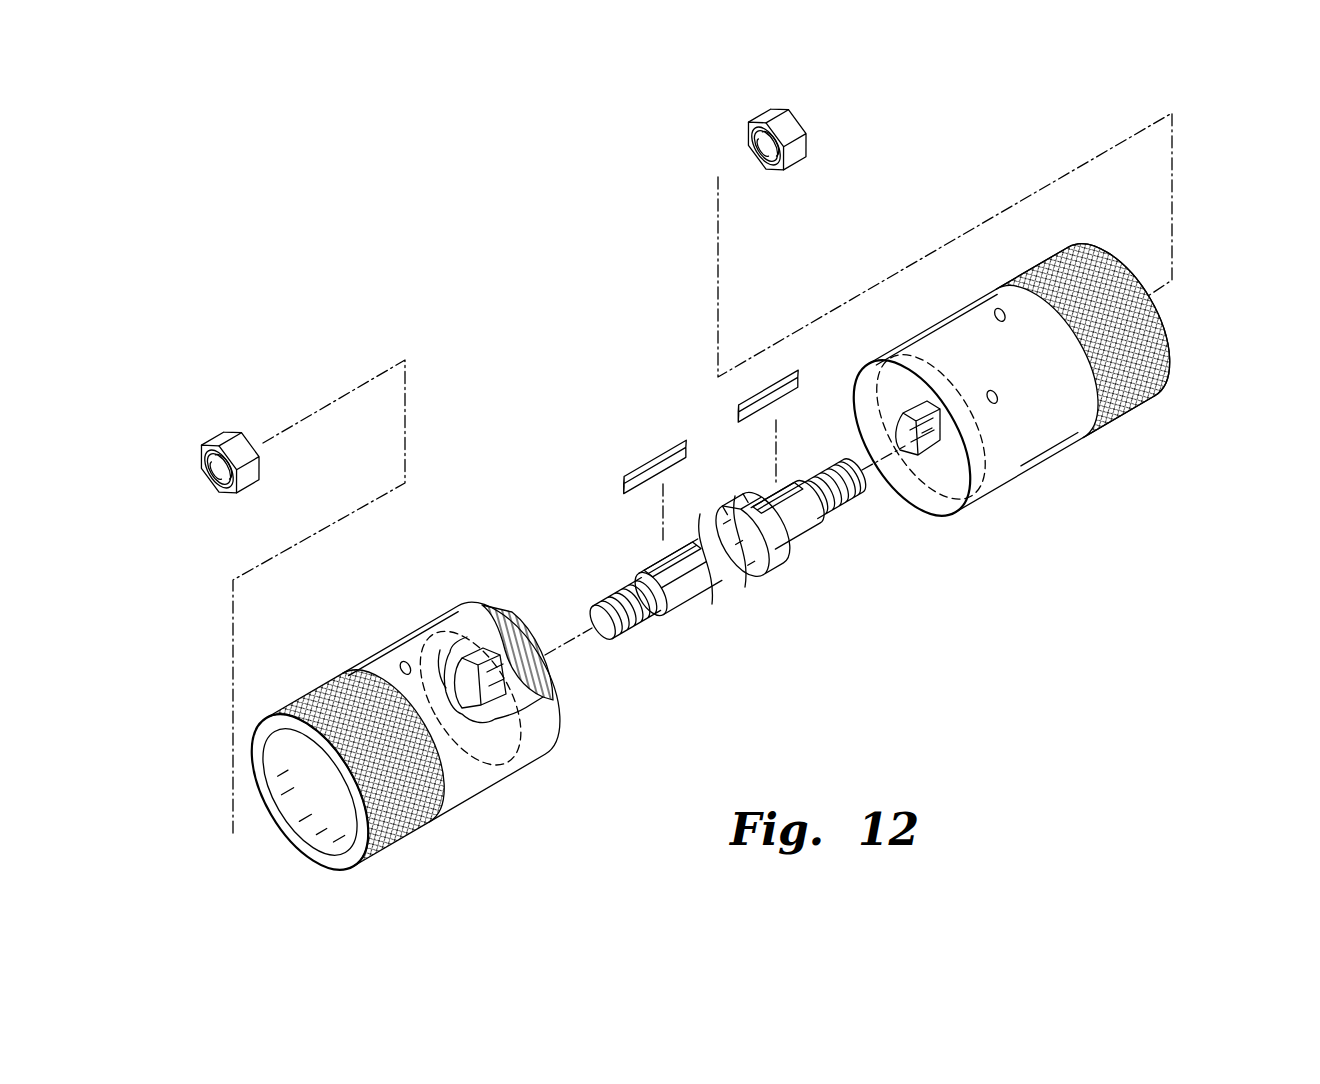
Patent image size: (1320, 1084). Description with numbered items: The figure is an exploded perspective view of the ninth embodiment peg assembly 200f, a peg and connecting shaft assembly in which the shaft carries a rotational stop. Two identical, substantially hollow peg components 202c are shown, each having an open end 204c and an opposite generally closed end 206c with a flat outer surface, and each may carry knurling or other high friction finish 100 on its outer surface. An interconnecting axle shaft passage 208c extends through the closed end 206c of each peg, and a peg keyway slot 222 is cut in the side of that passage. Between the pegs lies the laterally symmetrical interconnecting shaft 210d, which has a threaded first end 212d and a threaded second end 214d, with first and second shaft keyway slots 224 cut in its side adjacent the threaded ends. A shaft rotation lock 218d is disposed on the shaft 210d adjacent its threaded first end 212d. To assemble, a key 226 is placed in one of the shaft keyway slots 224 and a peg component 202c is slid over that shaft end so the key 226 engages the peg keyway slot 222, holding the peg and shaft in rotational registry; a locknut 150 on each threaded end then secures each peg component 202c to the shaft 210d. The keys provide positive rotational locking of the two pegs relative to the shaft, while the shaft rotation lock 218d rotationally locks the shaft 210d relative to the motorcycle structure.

The knurling or high friction finish 100 is at (400, 847).
The locknut 150 is at (212, 440).
The ninth embodiment peg assembly 200f is at (585, 330).
The peg component 202c is at (520, 812).
The open end 204c is at (302, 848).
The closed end 206c is at (485, 612).
The interconnecting axle shaft passage 208c is at (433, 648).
The interconnecting shaft 210d is at (765, 662).
The threaded first end 212d is at (843, 473).
The threaded second end 214d is at (626, 640).
The shaft rotation lock 218d is at (793, 560).
The peg keyway slot 222 is at (462, 650).
The shaft keyway slot 224 is at (778, 497).
The key 226 is at (650, 467).